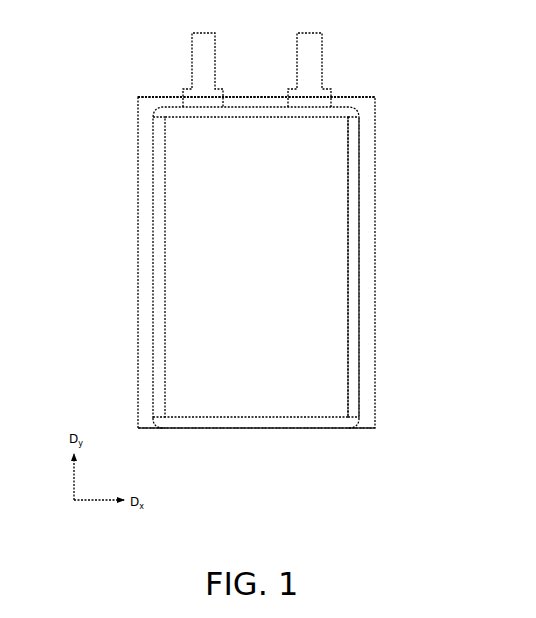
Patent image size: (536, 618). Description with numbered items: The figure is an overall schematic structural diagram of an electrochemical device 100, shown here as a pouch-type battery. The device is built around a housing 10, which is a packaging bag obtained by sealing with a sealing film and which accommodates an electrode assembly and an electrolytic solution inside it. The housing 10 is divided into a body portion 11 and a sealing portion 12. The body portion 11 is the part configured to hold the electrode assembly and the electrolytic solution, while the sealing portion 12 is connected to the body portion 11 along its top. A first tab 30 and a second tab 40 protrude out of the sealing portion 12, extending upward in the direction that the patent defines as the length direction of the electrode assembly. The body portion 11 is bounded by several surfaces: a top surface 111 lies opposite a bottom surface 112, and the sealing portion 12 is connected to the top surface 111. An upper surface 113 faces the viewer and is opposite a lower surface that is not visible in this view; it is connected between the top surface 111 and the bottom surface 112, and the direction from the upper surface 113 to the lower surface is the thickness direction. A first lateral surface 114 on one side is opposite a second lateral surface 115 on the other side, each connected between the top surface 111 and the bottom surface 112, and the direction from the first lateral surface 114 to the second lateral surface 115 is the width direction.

The electrochemical device 100 is at (266, 11).
The housing 10 is at (377, 300).
The body portion 11 is at (337, 178).
The sealing portion 12 is at (348, 97).
The top surface 111 is at (247, 96).
The bottom surface 112 is at (247, 429).
The upper surface 113 is at (334, 210).
The first lateral surface 114 is at (152, 243).
The second lateral surface 115 is at (362, 250).
The first tab 30 is at (191, 53).
The second tab 40 is at (313, 55).